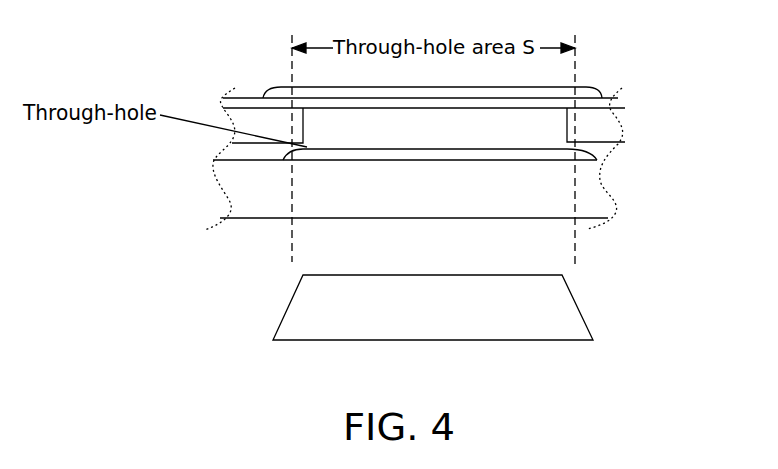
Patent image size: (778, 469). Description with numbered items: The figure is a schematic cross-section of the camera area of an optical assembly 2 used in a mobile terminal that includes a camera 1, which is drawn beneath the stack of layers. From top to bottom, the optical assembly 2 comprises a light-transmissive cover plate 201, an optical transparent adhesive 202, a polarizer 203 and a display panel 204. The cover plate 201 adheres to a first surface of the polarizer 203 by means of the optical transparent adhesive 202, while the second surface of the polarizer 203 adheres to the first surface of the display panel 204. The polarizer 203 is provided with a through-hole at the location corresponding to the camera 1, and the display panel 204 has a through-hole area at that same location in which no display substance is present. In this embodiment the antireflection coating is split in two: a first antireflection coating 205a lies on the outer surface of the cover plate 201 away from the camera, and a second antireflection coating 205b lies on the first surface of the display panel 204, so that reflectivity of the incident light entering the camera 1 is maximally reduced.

The camera 1 is at (305, 307).
The optical assembly 2 is at (222, 98).
The cover plate 201 is at (602, 102).
The optical transparent adhesive 202 is at (607, 127).
The polarizer 203 is at (597, 153).
The display panel 204 is at (597, 193).
The first antireflection coating 205a is at (583, 90).
The second antireflection coating 205b is at (328, 153).